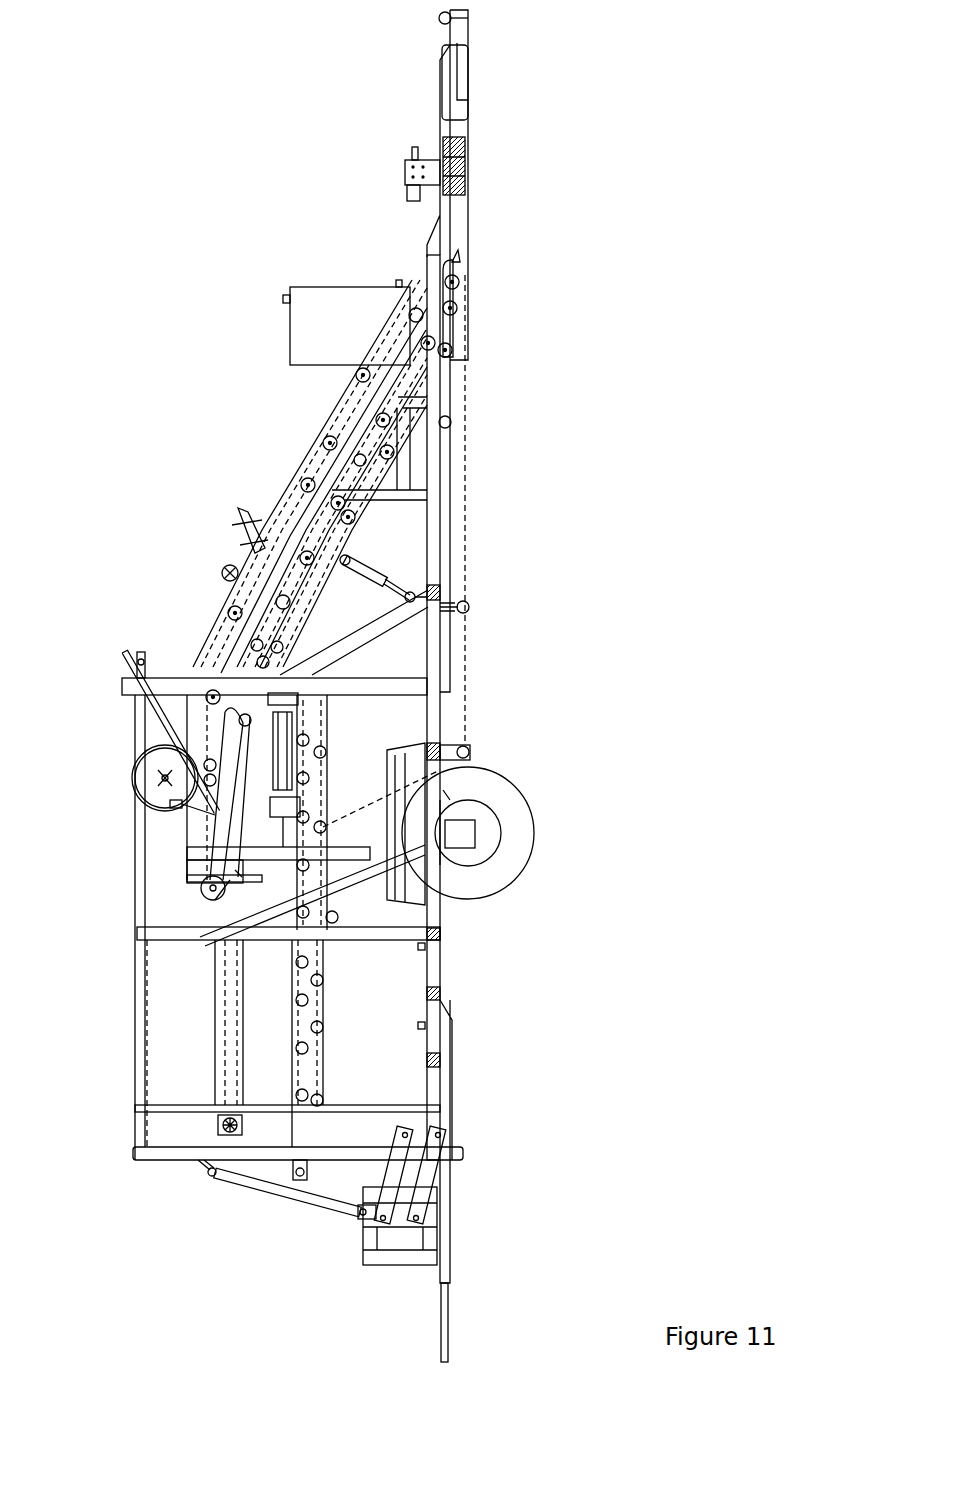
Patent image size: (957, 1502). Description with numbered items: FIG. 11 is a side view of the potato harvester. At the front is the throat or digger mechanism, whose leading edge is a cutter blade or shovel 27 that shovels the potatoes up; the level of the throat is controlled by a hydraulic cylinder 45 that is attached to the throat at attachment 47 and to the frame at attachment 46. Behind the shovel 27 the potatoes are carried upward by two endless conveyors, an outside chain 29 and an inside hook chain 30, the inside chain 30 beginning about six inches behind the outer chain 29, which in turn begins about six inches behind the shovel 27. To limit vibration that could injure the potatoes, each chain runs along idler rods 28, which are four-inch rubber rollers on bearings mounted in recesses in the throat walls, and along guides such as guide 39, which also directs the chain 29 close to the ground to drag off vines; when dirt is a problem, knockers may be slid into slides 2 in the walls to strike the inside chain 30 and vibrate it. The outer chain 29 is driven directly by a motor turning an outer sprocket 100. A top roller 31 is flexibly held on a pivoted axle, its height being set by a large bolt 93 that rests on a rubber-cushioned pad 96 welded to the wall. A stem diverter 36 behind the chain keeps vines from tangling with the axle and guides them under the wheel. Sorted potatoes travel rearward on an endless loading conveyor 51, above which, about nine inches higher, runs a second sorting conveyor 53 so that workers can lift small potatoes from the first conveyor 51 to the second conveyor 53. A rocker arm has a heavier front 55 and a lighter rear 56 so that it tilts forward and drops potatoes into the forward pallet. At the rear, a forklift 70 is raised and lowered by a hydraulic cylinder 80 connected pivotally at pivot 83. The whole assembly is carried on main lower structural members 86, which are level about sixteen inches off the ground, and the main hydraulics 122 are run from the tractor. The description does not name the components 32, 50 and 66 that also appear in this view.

The slides 2 is at (432, 370).
The cutter blade or shovel 27 is at (455, 262).
The idler rods 28 is at (330, 443).
The outside chain 29 is at (460, 338).
The inside hook chain 30 is at (228, 575).
The roller 31 is at (160, 780).
The rod 32 is at (150, 720).
The stem diverter 36 is at (265, 935).
The guide 39 is at (468, 748).
The hydraulic cylinder 45 is at (440, 590).
The attachment 46 is at (468, 605).
The attachment 47 is at (360, 568).
The cylinder 50 is at (285, 780).
The endless loading conveyor 51 is at (305, 1030).
The second endless sorting conveyor 53 is at (228, 1090).
The front of the rocker arm 55 is at (232, 520).
The rear of the rocker arm 56 is at (255, 520).
The support post 66 is at (450, 1326).
The forklift 70 is at (398, 1260).
The hydraulic cylinder 80 is at (262, 1190).
The pivot 83 is at (212, 1178).
The main lower structural members 86 is at (442, 970).
The bolt 93 is at (175, 805).
The pad 96 is at (145, 760).
The outer sprocket 100 is at (190, 930).
The main hydraulics 122 is at (315, 290).